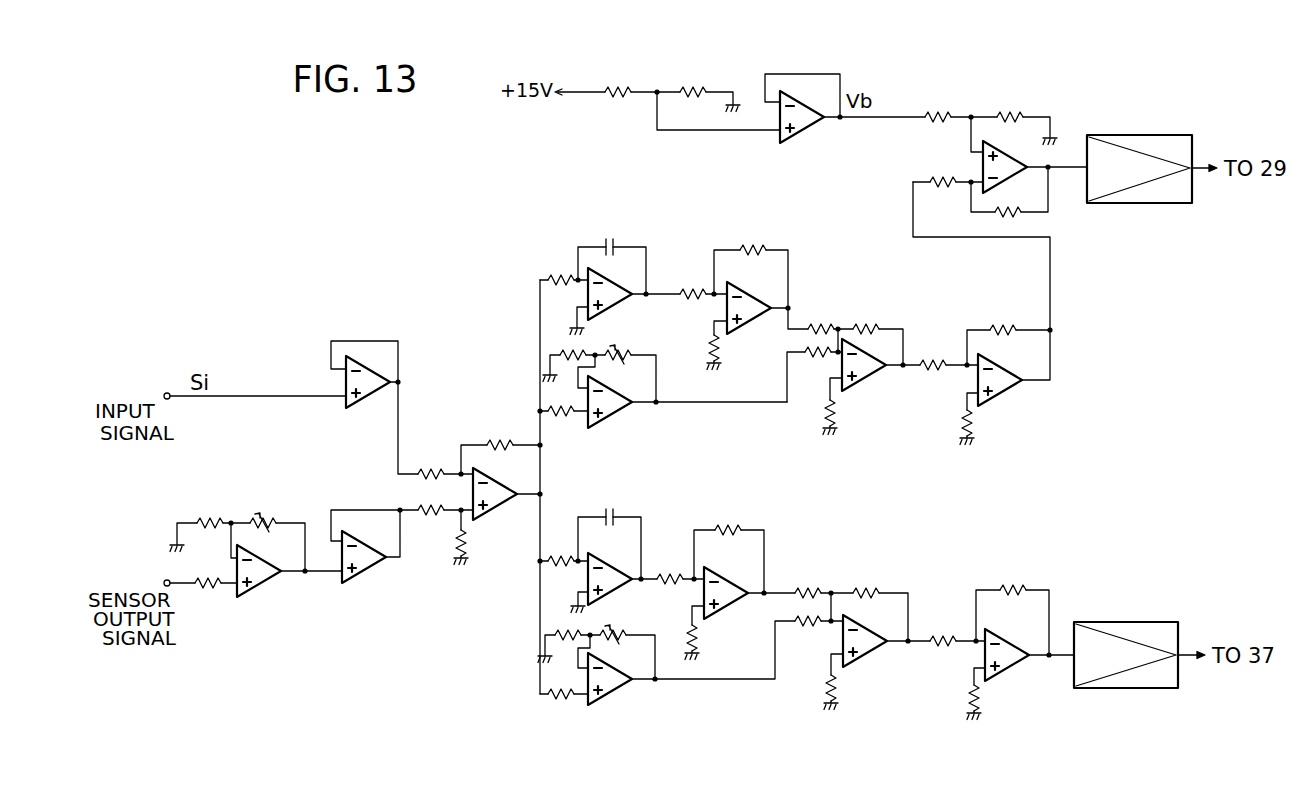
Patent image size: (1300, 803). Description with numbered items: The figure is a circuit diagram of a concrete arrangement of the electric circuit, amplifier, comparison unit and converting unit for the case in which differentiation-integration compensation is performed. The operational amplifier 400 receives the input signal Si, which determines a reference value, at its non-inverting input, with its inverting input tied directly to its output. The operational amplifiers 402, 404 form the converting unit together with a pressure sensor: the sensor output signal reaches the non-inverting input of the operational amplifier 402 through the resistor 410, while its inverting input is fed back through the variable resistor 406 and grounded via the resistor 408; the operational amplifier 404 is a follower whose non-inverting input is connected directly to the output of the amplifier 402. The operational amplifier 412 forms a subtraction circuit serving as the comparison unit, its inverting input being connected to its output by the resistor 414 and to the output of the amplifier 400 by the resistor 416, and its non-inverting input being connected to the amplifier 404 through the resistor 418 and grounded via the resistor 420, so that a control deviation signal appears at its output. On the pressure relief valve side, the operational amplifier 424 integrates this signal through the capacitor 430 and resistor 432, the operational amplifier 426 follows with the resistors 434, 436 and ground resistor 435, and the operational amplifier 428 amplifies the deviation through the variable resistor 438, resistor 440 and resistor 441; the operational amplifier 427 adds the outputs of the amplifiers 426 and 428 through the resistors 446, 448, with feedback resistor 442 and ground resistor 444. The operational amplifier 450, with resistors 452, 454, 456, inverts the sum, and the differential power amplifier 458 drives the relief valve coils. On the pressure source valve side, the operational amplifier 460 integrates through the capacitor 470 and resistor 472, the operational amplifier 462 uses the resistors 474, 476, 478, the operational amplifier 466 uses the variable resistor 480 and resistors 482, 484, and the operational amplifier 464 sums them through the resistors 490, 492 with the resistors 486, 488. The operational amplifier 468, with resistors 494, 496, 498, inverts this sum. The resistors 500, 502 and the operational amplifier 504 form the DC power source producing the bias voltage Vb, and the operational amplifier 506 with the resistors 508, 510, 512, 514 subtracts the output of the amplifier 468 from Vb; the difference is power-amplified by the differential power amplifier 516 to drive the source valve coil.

The operational amplifier 400 is at (366, 397).
The operational amplifier 402 is at (266, 580).
The operational amplifier 404 is at (376, 570).
The variable resistor 406 is at (263, 521).
The resistor 408 is at (208, 521).
The resistor 410 is at (218, 581).
The operational amplifier 412 is at (502, 508).
The resistor 414 is at (502, 444).
The resistor 416 is at (424, 472).
The resistor 418 is at (424, 508).
The resistor 420 is at (465, 551).
The operational amplifier 424 is at (616, 568).
The operational amplifier 426 is at (737, 582).
The operational amplifier 427 is at (874, 648).
The operational amplifier 428 is at (618, 690).
The capacitor 430 is at (613, 514).
The resistor 432 is at (562, 555).
The resistor 434 is at (726, 526).
The resistor 435 is at (695, 636).
The resistor 436 is at (666, 576).
The variable resistor 438 is at (619, 624).
The resistor 440 is at (556, 634).
The resistor 441 is at (560, 698).
The resistor 442 is at (868, 590).
The resistor 444 is at (828, 688).
The resistor 446 is at (807, 590).
The resistor 448 is at (794, 618).
The operational amplifier 450 is at (1016, 661).
The resistor 452 is at (970, 695).
The resistor 454 is at (1018, 587).
The resistor 456 is at (940, 638).
The differential power amplifier 458 is at (1140, 622).
The operational amplifier 460 is at (620, 301).
The operational amplifier 462 is at (756, 298).
The operational amplifier 464 is at (876, 376).
The operational amplifier 466 is at (622, 411).
The operational amplifier 468 is at (1014, 393).
The capacitor 470 is at (614, 235).
The resistor 472 is at (550, 274).
The resistor 474 is at (752, 246).
The resistor 476 is at (690, 291).
The resistor 478 is at (712, 356).
The variable resistor 480 is at (629, 352).
The resistor 482 is at (560, 355).
The resistor 484 is at (560, 416).
The resistor 486 is at (870, 325).
The resistor 488 is at (828, 410).
The resistor 490 is at (820, 326).
The resistor 492 is at (805, 352).
The resistor 494 is at (964, 420).
The resistor 496 is at (996, 328).
The resistor 498 is at (935, 362).
The resistor 500 is at (616, 95).
The resistor 502 is at (688, 94).
The operational amplifier 504 is at (819, 126).
The operational amplifier 506 is at (983, 160).
The resistor 508 is at (936, 104).
The resistor 510 is at (1014, 104).
The resistor 512 is at (944, 188).
The resistor 514 is at (1022, 216).
The differential power amplifier 516 is at (1154, 135).